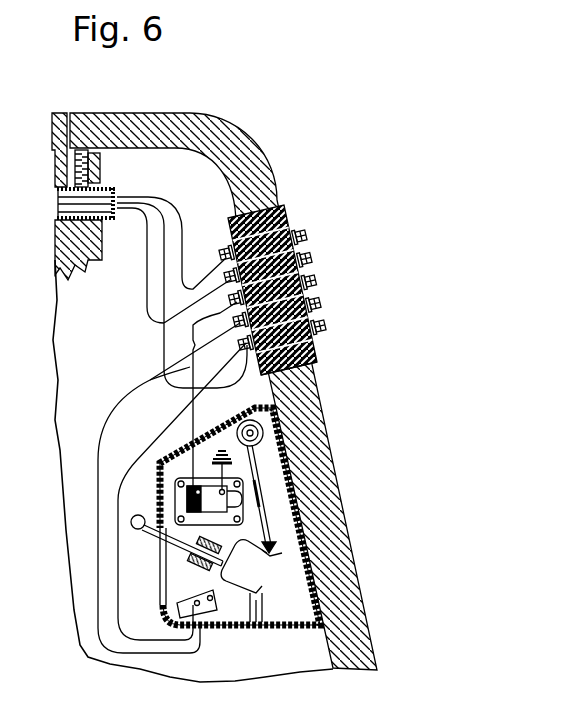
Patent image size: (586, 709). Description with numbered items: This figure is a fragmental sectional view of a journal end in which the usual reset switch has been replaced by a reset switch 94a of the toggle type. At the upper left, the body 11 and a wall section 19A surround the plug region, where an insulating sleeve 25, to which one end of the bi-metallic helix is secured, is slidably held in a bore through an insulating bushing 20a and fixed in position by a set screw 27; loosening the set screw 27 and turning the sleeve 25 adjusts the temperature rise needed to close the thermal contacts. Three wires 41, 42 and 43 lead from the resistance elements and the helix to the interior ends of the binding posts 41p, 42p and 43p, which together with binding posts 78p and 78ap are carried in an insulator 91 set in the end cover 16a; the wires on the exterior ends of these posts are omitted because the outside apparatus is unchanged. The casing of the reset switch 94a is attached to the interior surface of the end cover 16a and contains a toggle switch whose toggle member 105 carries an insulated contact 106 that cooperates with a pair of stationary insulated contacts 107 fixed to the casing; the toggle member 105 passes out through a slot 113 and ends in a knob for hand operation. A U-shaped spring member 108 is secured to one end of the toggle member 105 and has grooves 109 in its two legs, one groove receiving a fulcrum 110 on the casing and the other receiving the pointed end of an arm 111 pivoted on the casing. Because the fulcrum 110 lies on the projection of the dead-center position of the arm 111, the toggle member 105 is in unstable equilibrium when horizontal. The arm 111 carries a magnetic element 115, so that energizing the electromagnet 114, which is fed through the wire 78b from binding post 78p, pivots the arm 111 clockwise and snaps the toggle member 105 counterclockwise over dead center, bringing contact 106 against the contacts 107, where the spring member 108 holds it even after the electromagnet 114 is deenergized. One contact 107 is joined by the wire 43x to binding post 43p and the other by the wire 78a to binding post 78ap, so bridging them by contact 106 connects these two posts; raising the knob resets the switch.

The housing body 11 is at (56, 113).
The set screw 27 is at (88, 150).
The insulating bushing 20a is at (100, 157).
The insulating sleeve 25 is at (113, 190).
The wire 43 is at (153, 202).
The wire 42 is at (177, 237).
The wire 41 is at (146, 283).
The end cover 16a is at (257, 152).
The binding post 42p is at (290, 232).
The binding post 41p is at (312, 256).
The binding post 78p is at (319, 280).
The binding post 78ap is at (324, 307).
The binding post 43p is at (318, 343).
The insulator 91 is at (312, 365).
The body section 19A is at (87, 266).
The wire 78a is at (130, 392).
The wire 78b is at (197, 403).
The wire 43x is at (155, 440).
The reset switch 94a is at (158, 478).
The arm 111 is at (241, 443).
The magnetic element 115 is at (226, 462).
The electromagnet 114 is at (210, 508).
The toggle member 105 is at (153, 528).
The slot 113 is at (160, 573).
The contact 106 is at (211, 567).
The U-shaped spring member 108 is at (243, 547).
The grooves 109 is at (273, 553).
The fulcrum 110 is at (256, 607).
The stationary insulated contacts 107 is at (217, 596).